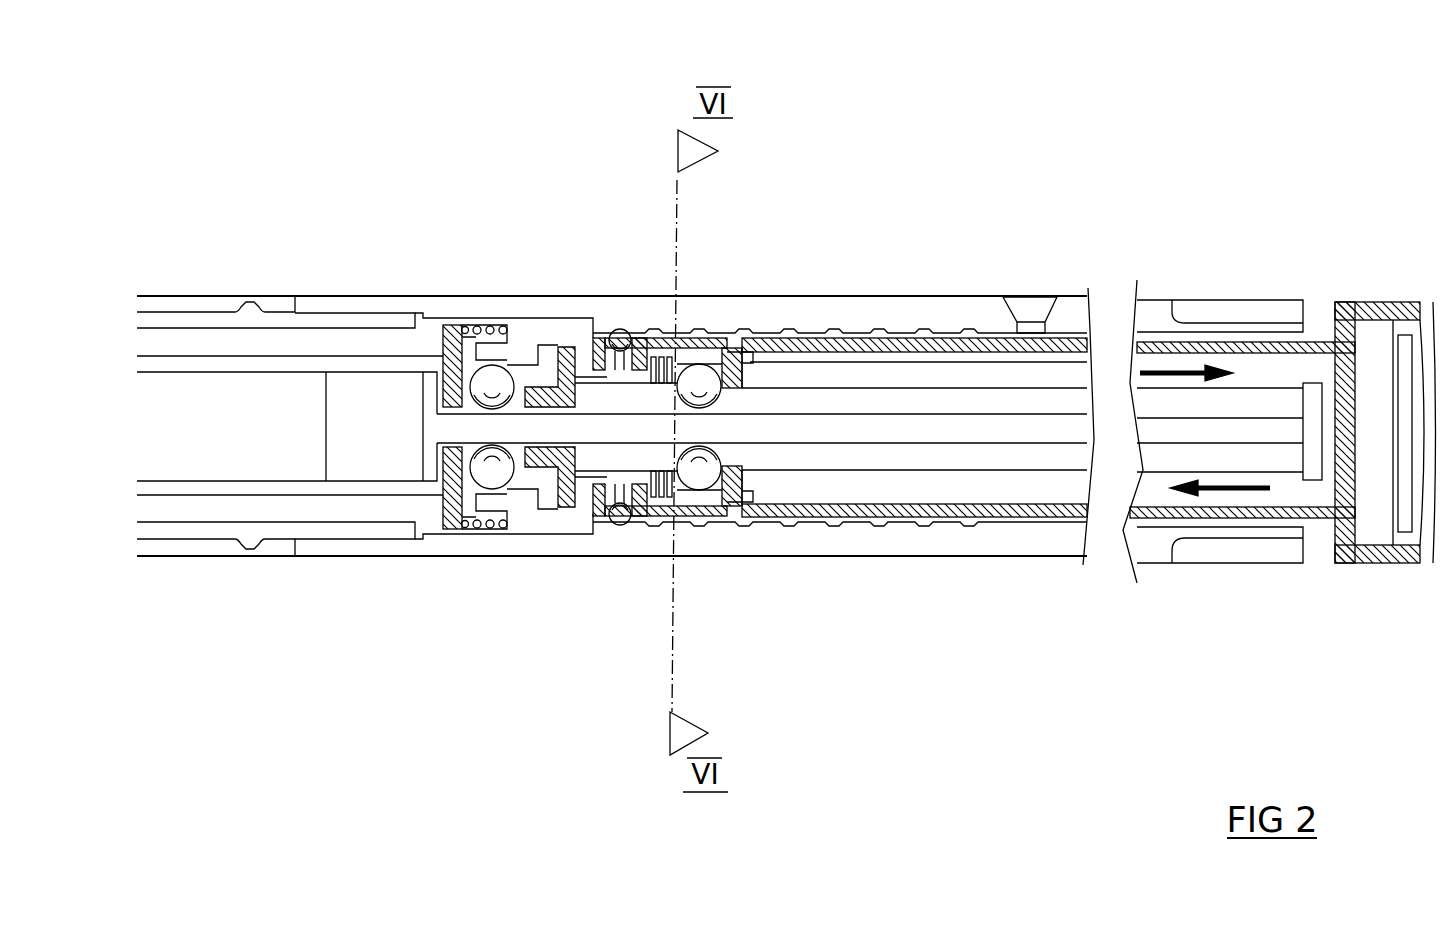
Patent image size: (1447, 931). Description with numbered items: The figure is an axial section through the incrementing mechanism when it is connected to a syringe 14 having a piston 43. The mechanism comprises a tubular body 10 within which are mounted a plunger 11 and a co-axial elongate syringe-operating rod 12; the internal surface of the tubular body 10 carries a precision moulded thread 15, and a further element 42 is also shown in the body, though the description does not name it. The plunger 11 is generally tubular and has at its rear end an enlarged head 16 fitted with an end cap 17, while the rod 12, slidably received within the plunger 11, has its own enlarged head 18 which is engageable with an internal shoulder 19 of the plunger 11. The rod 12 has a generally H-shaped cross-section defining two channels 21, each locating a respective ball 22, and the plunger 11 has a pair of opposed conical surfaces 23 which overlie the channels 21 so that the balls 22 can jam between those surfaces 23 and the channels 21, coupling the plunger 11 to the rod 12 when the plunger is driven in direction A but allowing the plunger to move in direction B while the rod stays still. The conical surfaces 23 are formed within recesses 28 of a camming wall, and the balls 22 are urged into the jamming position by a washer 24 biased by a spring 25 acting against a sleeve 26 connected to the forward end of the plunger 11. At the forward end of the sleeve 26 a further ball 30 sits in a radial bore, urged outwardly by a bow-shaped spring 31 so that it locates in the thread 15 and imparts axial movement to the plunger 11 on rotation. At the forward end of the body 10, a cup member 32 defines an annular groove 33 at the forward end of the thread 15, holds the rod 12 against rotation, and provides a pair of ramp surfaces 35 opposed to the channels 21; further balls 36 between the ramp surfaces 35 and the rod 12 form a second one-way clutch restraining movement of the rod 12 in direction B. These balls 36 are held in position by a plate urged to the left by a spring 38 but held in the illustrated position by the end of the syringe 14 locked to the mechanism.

The tubular body 10 is at (1153, 547).
The plunger 11 is at (1228, 348).
The syringe-operating rod 12 is at (915, 455).
The syringe 14 is at (235, 488).
The thread 15 is at (790, 347).
The enlarged head 16 is at (1373, 553).
The end cap 17 is at (1425, 547).
The enlarged head 18 is at (1312, 470).
The internal shoulder 19 is at (746, 362).
The channels 21 is at (885, 412).
The balls 22 is at (715, 340).
The conical surfaces 23 is at (699, 386).
The washer 24 is at (660, 340).
The spring 25 is at (653, 515).
The sleeve 26 is at (617, 520).
The recesses 28 is at (727, 487).
The ball 30 is at (618, 335).
The bow-shaped spring 31 is at (595, 345).
The cup member 32 is at (520, 520).
The annular groove 33 is at (587, 528).
The ramp surfaces 35 is at (490, 385).
The balls 36 is at (480, 340).
The spring 38 is at (490, 330).
The screw 42 is at (1027, 308).
The piston 43 is at (360, 405).